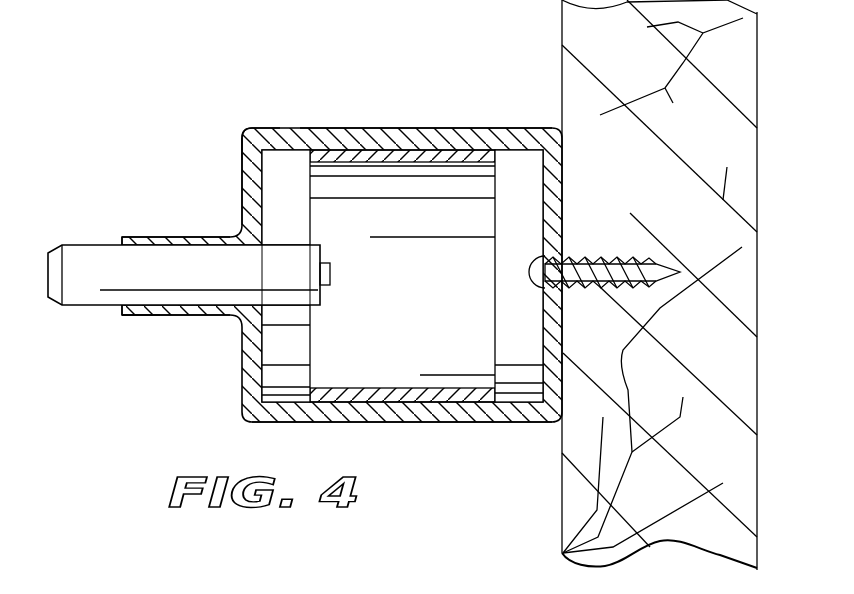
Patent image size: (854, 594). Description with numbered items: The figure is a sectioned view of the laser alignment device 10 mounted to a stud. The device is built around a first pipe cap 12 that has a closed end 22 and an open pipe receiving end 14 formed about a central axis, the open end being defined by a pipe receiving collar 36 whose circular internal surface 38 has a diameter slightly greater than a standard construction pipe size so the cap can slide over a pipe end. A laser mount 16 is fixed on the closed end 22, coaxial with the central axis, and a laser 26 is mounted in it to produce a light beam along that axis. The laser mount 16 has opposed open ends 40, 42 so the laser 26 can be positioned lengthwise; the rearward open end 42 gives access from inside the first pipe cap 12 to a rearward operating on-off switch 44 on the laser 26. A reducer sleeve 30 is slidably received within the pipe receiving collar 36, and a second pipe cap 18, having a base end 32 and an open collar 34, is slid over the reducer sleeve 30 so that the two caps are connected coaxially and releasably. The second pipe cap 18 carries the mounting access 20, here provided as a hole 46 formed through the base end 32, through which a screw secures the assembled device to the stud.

The laser alignment device 10 is at (206, 101).
The first pipe cap 12 is at (241, 404).
The open pipe receiving end 14 is at (395, 412).
The laser mount 16 is at (183, 318).
The second pipe cap 18 is at (493, 422).
The mounting access 20 is at (604, 250).
The closed end 22 is at (240, 183).
The laser 26 is at (89, 268).
The reducer sleeve 30 is at (450, 306).
The base end 32 is at (547, 221).
The open collar 34 is at (451, 138).
The pipe receiving collar 36 is at (345, 140).
The internal surface 38 is at (298, 160).
The open end 40 is at (120, 316).
The rearward open end 42 is at (262, 238).
The rearward operating on-off switch 44 is at (333, 275).
The hole 46 is at (553, 290).